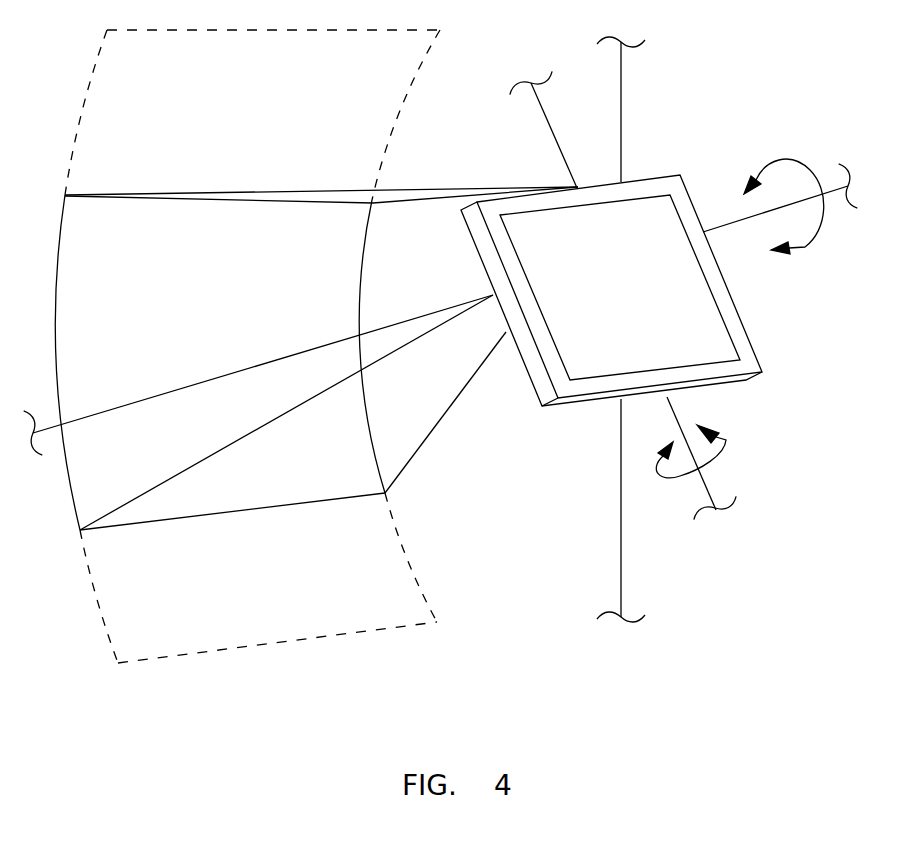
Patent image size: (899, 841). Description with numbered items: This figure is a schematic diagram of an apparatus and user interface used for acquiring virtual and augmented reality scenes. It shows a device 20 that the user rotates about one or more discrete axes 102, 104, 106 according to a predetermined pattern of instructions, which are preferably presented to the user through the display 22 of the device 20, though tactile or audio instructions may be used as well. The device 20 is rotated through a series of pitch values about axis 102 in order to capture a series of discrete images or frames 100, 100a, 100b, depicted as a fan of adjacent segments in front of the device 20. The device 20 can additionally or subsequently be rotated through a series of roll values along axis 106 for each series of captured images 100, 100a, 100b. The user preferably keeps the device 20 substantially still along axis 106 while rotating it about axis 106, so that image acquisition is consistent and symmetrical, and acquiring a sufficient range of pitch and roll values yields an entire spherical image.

The device 20 is at (688, 192).
The display 22 is at (631, 296).
The image/frame 100 is at (214, 308).
The image/frame 100a is at (278, 114).
The image/frame 100b is at (292, 597).
The axis 102 is at (730, 226).
The axis 104 is at (668, 401).
The axis 106 is at (621, 472).